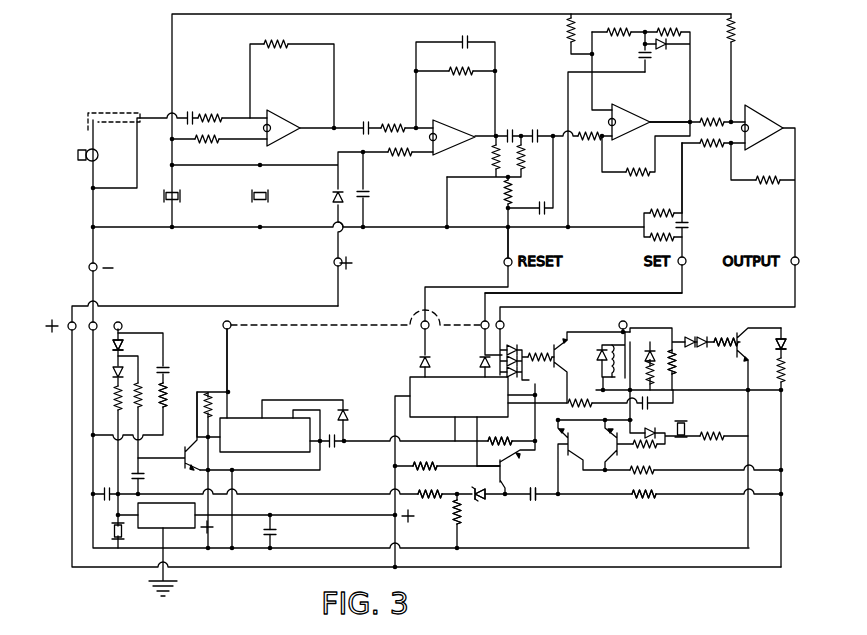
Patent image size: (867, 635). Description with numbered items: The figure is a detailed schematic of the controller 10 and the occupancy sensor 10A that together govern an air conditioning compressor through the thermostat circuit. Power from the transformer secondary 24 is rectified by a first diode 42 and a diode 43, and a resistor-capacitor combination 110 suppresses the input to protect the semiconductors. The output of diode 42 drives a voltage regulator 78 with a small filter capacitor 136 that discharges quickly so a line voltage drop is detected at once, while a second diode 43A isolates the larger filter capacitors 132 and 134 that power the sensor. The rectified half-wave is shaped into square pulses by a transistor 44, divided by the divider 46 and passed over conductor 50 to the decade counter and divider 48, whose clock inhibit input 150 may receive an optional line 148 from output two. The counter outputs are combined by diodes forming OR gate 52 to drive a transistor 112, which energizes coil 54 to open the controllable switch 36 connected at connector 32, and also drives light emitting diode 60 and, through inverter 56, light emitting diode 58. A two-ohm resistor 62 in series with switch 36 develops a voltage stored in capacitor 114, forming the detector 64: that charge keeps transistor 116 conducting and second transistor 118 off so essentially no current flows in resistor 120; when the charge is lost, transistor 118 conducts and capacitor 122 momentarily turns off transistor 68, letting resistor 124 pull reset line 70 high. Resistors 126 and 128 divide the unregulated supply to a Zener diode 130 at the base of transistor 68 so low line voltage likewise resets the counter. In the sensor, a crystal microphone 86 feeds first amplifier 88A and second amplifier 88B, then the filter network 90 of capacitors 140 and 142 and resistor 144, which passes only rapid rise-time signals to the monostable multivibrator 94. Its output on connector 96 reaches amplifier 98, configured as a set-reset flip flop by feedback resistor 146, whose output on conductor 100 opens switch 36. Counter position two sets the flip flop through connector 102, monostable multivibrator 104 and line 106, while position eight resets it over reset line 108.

The crystal microphone 86 is at (77, 157).
The first amplifier 88A is at (295, 114).
The occupancy sensor 10A is at (355, 90).
The second amplifier 88B is at (462, 124).
The filter network 90 is at (508, 90).
The capacitor 140 is at (516, 123).
The capacitor 142 is at (541, 126).
The resistor 144 is at (527, 160).
The monostable multivibrator 94 is at (618, 106).
The connector 96 is at (677, 104).
The set-reset flip flop 98 is at (775, 110).
The second diode 43A is at (337, 194).
The filter capacitor 132 is at (165, 198).
The filter capacitor 134 is at (267, 203).
The line 106 is at (683, 182).
The resistor 146 is at (764, 187).
The monostable multivibrator 104 is at (684, 226).
The conductor 100 is at (778, 246).
The reset line 108 is at (505, 243).
The connector 102 is at (545, 294).
The connector 32 is at (628, 318).
The secondary 24 is at (196, 305).
The controller 10 is at (352, 317).
The first diode 42 is at (122, 342).
The diode 43 is at (118, 372).
The resistor-capacitor combination 110 is at (165, 392).
The clock enable or clock inhibit input 150 is at (230, 372).
The divider 46 is at (245, 418).
The optional line 148 is at (283, 329).
The decade counter and divider 48 is at (410, 382).
The transistor 44 is at (181, 452).
The conductor 50 is at (441, 440).
The reset line 70 is at (472, 419).
The OR gate 52 is at (506, 350).
The transistor 112 is at (541, 352).
The coil 54 is at (613, 343).
The controllable switch 36 is at (629, 334).
The inverter 56 is at (718, 341).
The light emitting diode 58 is at (782, 337).
The resistor 62 is at (596, 384).
The light emitting diode 60 is at (675, 365).
The capacitor 114 is at (688, 425).
The detector 64 is at (673, 460).
The transistor 116 is at (602, 439).
The second transistor 118 is at (577, 463).
The transistor 68 is at (511, 470).
The resistor 124 is at (442, 468).
The resistor 128 is at (437, 502).
The resistor 126 is at (460, 511).
The Zener diode 130 is at (489, 500).
The capacitor 122 is at (540, 500).
The resistor 120 is at (645, 499).
The filter capacitor 136 is at (117, 540).
The voltage regulator 78 is at (183, 529).